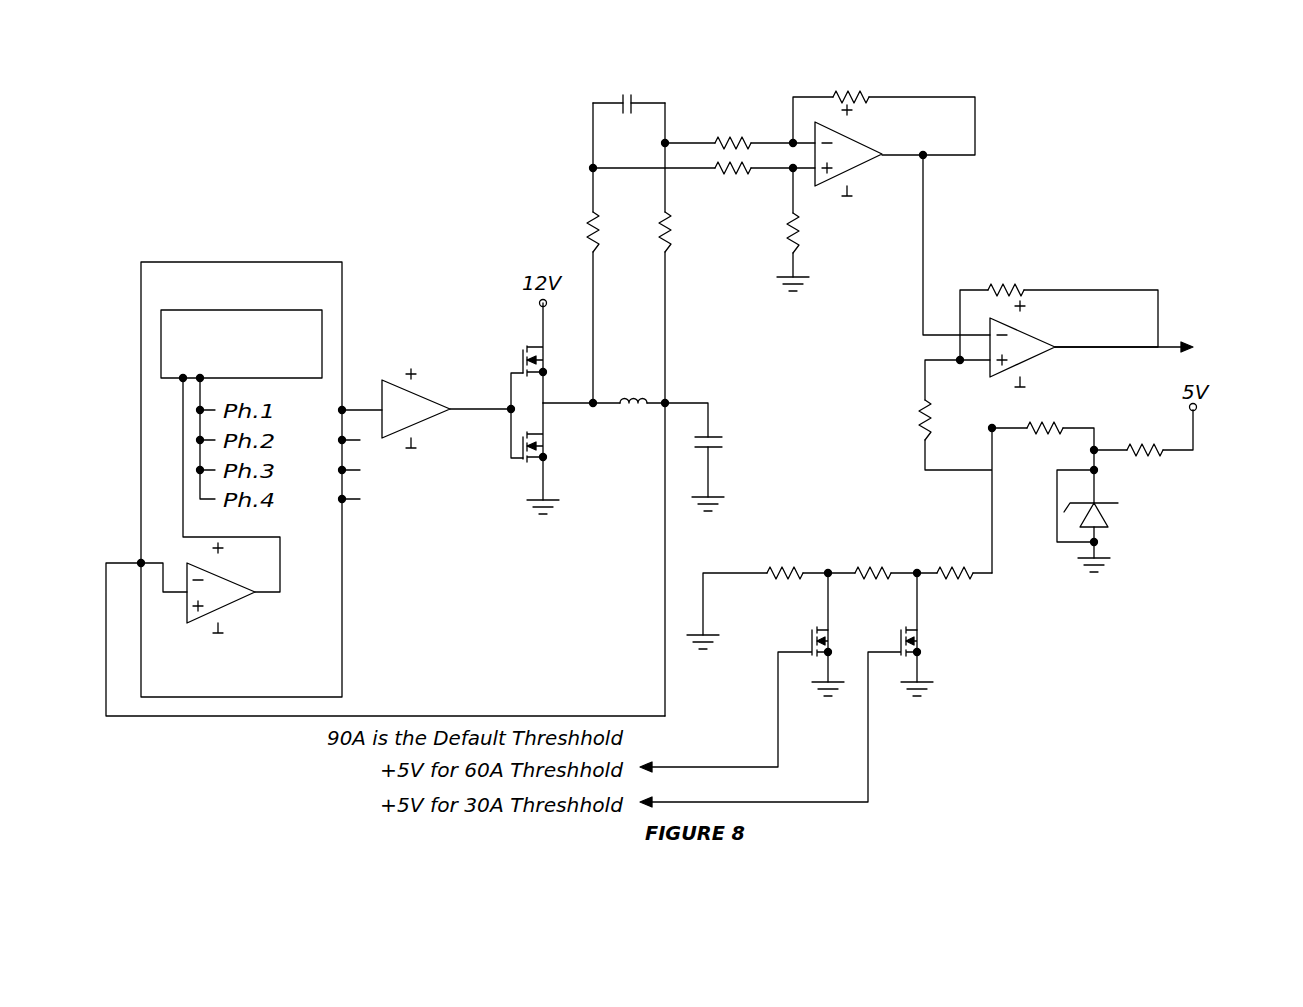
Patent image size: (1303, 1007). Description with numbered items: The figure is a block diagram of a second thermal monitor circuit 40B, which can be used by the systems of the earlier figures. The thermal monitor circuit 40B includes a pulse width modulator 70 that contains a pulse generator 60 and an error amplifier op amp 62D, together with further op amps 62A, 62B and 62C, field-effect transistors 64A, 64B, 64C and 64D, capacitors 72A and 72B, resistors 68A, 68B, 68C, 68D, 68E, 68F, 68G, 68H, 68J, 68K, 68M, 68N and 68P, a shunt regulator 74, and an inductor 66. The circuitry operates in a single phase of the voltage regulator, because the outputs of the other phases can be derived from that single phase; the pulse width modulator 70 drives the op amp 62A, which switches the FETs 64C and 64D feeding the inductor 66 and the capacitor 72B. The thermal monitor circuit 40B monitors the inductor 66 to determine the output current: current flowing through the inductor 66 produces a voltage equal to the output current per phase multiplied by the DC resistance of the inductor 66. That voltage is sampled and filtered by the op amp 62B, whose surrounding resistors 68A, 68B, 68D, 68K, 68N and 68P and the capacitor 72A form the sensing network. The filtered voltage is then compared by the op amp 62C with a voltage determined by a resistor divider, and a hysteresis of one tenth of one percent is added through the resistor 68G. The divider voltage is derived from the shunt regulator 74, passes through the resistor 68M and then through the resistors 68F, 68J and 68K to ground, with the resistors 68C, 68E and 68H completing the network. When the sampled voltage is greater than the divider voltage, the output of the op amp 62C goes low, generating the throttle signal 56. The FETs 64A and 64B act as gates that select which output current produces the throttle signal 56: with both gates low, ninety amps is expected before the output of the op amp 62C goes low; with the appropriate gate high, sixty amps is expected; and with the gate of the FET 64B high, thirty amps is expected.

The second thermal monitor circuit 40B is at (244, 90).
The pulse width modulator 70 is at (300, 263).
The pulse generator 60 is at (280, 311).
The op amp 62A is at (425, 428).
The op amp 62B is at (858, 170).
The op amp 62C is at (1040, 357).
The op amp 62D is at (236, 604).
The field-effect transistor 64A is at (758, 696).
The field-effect transistor 64B is at (803, 713).
The field-effect transistor 64C is at (513, 353).
The field-effect transistor 64D is at (557, 451).
The inductor 66 is at (633, 386).
The resistor 68A is at (735, 133).
The resistor 68B is at (735, 183).
The resistor 68C is at (905, 420).
The resistor 68D is at (572, 232).
The resistor 68E is at (1146, 439).
The resistor 68F is at (955, 560).
The resistor 68G is at (1009, 280).
The resistor 68H is at (875, 560).
The resistor 68J is at (785, 560).
The resistor 68K is at (688, 232).
The resistor 68M is at (1044, 416).
The resistor 68N is at (818, 233).
The resistor 68P is at (853, 85).
The capacitor 72A is at (627, 91).
The capacitor 72B is at (731, 441).
The shunt regulator 74 is at (1117, 499).
The throttle signal 56 is at (1166, 344).